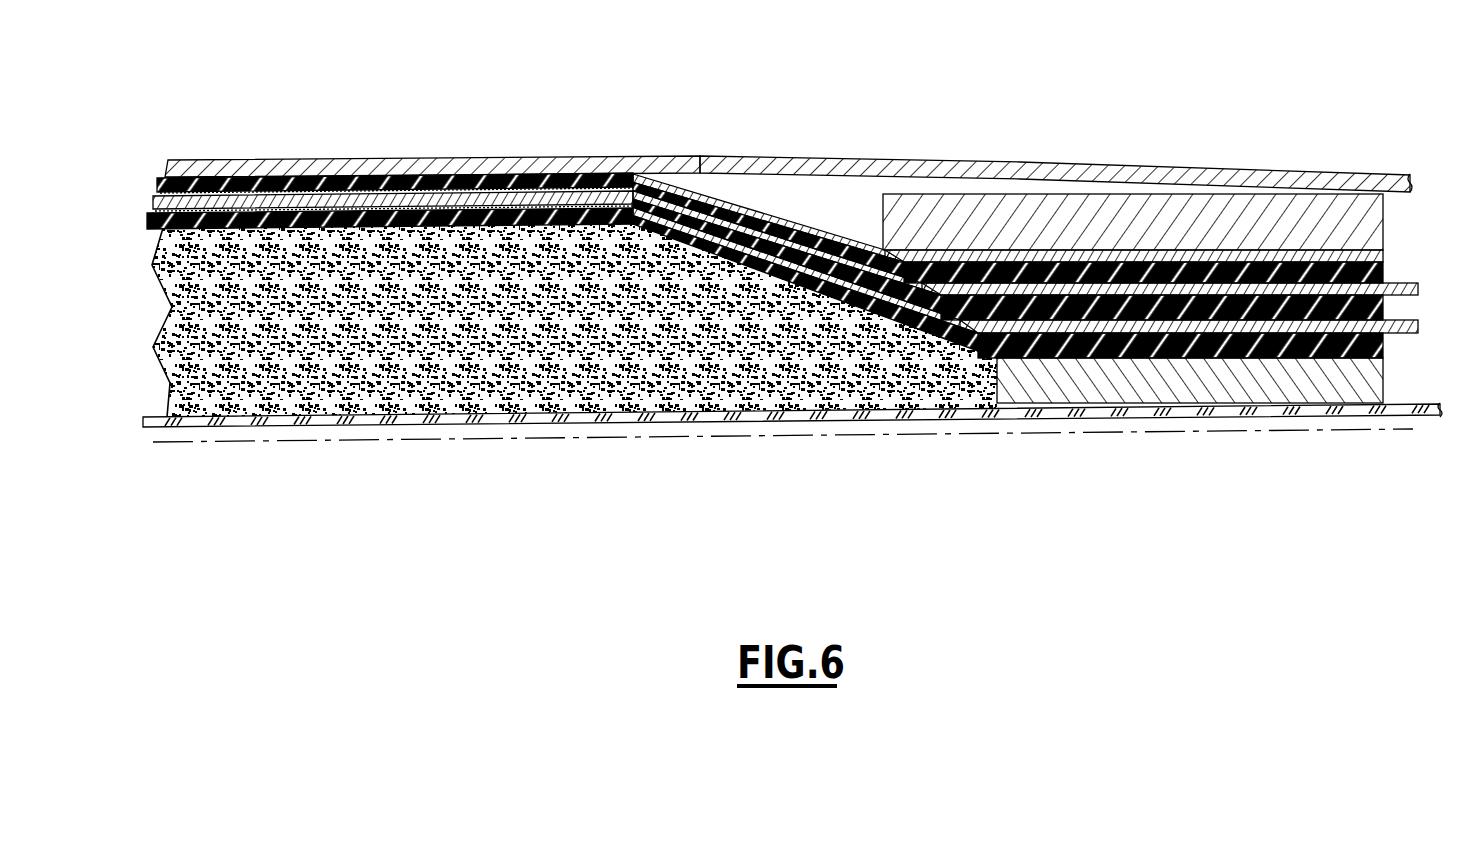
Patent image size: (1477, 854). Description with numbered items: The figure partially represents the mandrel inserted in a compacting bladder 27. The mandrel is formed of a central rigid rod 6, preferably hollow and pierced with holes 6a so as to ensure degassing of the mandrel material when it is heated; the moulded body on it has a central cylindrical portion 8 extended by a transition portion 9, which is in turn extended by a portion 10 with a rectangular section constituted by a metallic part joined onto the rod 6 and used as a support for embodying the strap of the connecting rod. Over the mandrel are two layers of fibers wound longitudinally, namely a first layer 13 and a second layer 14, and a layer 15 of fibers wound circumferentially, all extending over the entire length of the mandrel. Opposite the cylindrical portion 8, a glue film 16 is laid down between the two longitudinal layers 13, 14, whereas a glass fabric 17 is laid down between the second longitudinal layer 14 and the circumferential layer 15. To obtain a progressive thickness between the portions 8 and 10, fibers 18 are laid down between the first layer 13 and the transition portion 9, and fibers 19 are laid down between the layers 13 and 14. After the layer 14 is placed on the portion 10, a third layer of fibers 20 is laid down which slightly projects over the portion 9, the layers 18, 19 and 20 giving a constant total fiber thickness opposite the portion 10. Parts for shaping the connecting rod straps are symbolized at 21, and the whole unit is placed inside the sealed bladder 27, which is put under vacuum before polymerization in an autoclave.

The central rigid rod 6 is at (143, 430).
The holes 6a is at (437, 418).
The central cylindrical portion 8 is at (477, 287).
The transition portion 9 is at (698, 303).
The rectangular section portion 10 is at (1150, 377).
The first layer of longitudinal fibers 13 is at (645, 176).
The second layer of longitudinal fibers 14 is at (578, 176).
The layer of circumferential fibers 15 is at (416, 200).
The glue film 16 is at (235, 174).
The glass fabric 17 is at (330, 178).
The fibers 18 is at (918, 322).
The fibers 19 is at (828, 245).
The third layer of fibers 20 is at (1000, 253).
The shaping parts 21 is at (1152, 222).
The sealed bladder 27 is at (913, 148).